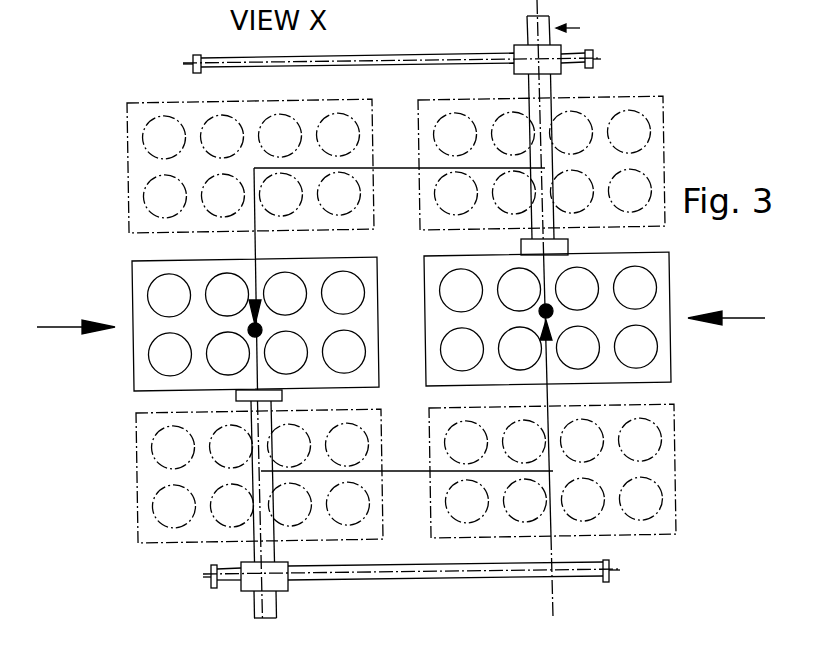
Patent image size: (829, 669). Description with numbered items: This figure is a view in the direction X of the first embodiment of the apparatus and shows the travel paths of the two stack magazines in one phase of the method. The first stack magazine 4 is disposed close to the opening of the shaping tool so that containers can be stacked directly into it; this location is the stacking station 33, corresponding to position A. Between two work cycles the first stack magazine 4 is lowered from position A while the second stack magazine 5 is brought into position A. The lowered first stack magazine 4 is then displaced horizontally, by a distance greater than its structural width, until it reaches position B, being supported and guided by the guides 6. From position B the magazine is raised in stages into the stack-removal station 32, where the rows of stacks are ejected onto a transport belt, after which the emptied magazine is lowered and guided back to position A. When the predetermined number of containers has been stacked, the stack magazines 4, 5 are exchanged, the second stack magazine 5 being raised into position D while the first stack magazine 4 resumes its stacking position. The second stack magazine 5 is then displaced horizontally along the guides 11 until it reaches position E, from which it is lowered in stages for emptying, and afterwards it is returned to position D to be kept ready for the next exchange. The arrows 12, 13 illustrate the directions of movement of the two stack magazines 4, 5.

The first stack magazine 4 is at (131, 292).
The second stack magazine 5 is at (672, 285).
The guides 6 is at (455, 579).
The guides 11 is at (408, 57).
The arrow 12 is at (410, 473).
The arrow 13 is at (405, 170).
The stack-removal station 32 is at (726, 308).
The stacking station 33 is at (76, 317).
The position A is at (133, 484).
The position B is at (676, 460).
The position D is at (158, 101).
The position E is at (668, 120).